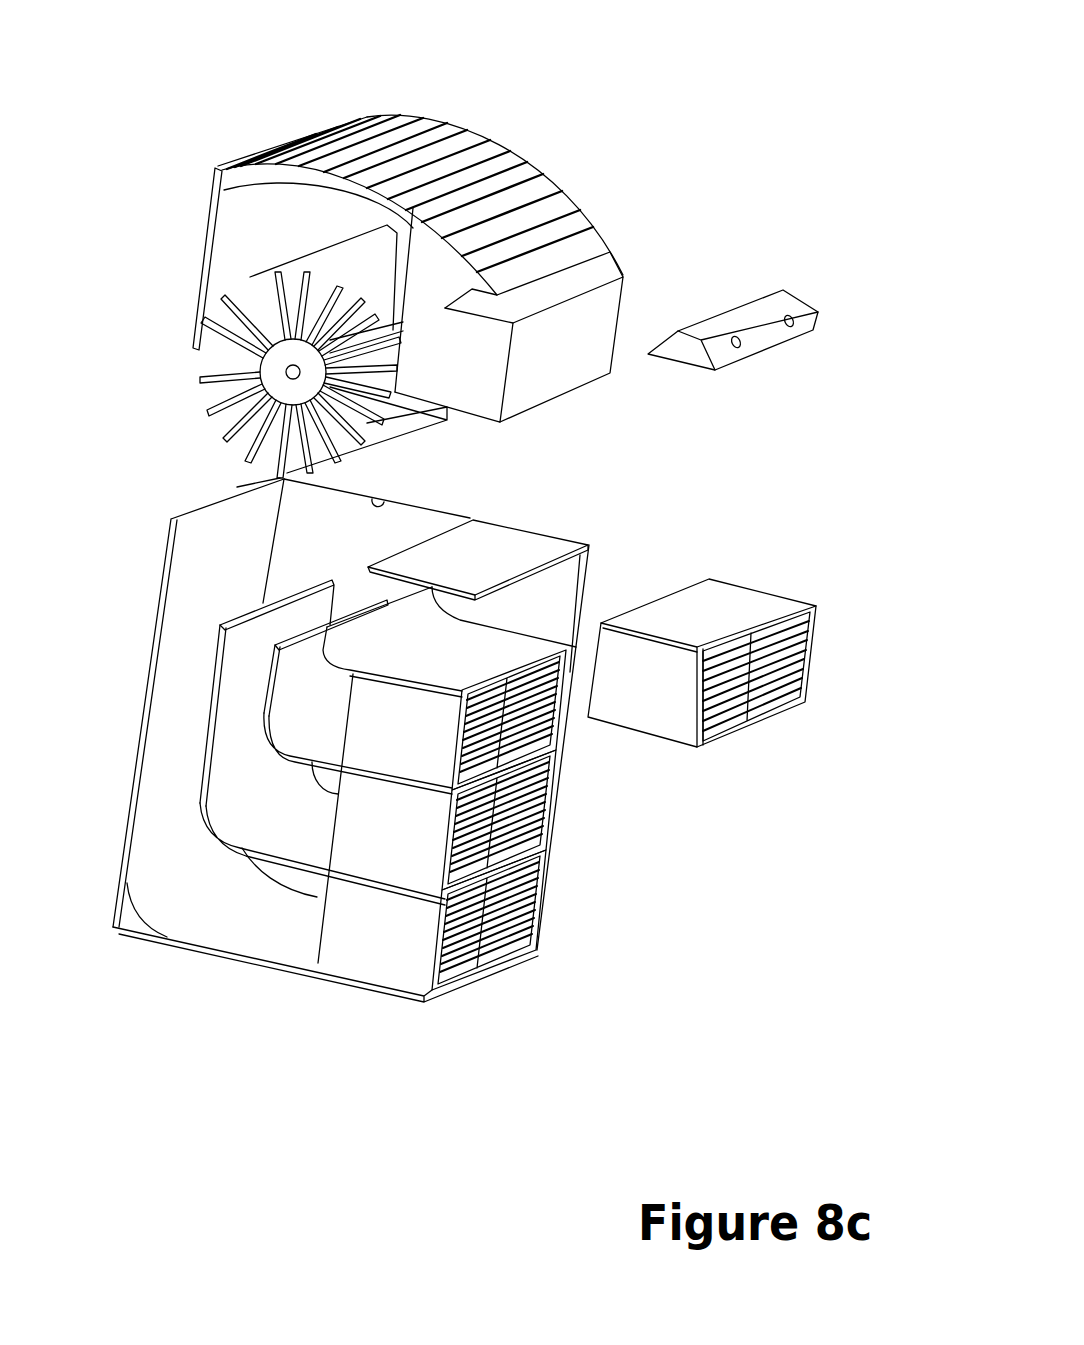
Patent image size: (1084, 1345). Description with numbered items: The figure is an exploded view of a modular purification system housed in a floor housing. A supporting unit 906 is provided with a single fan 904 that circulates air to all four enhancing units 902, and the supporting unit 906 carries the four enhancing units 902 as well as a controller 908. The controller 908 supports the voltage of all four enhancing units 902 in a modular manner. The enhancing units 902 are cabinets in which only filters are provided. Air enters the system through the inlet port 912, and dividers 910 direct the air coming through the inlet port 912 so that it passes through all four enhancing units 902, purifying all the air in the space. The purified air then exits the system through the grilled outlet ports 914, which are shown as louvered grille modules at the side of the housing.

The enhancing unit 902 is at (771, 688).
The fan 904 is at (277, 362).
The supporting unit 906 is at (505, 228).
The controller 908 is at (758, 340).
The dividers 910 is at (389, 605).
The inlet port 912 is at (330, 140).
The grilled outlet port 914 is at (808, 646).